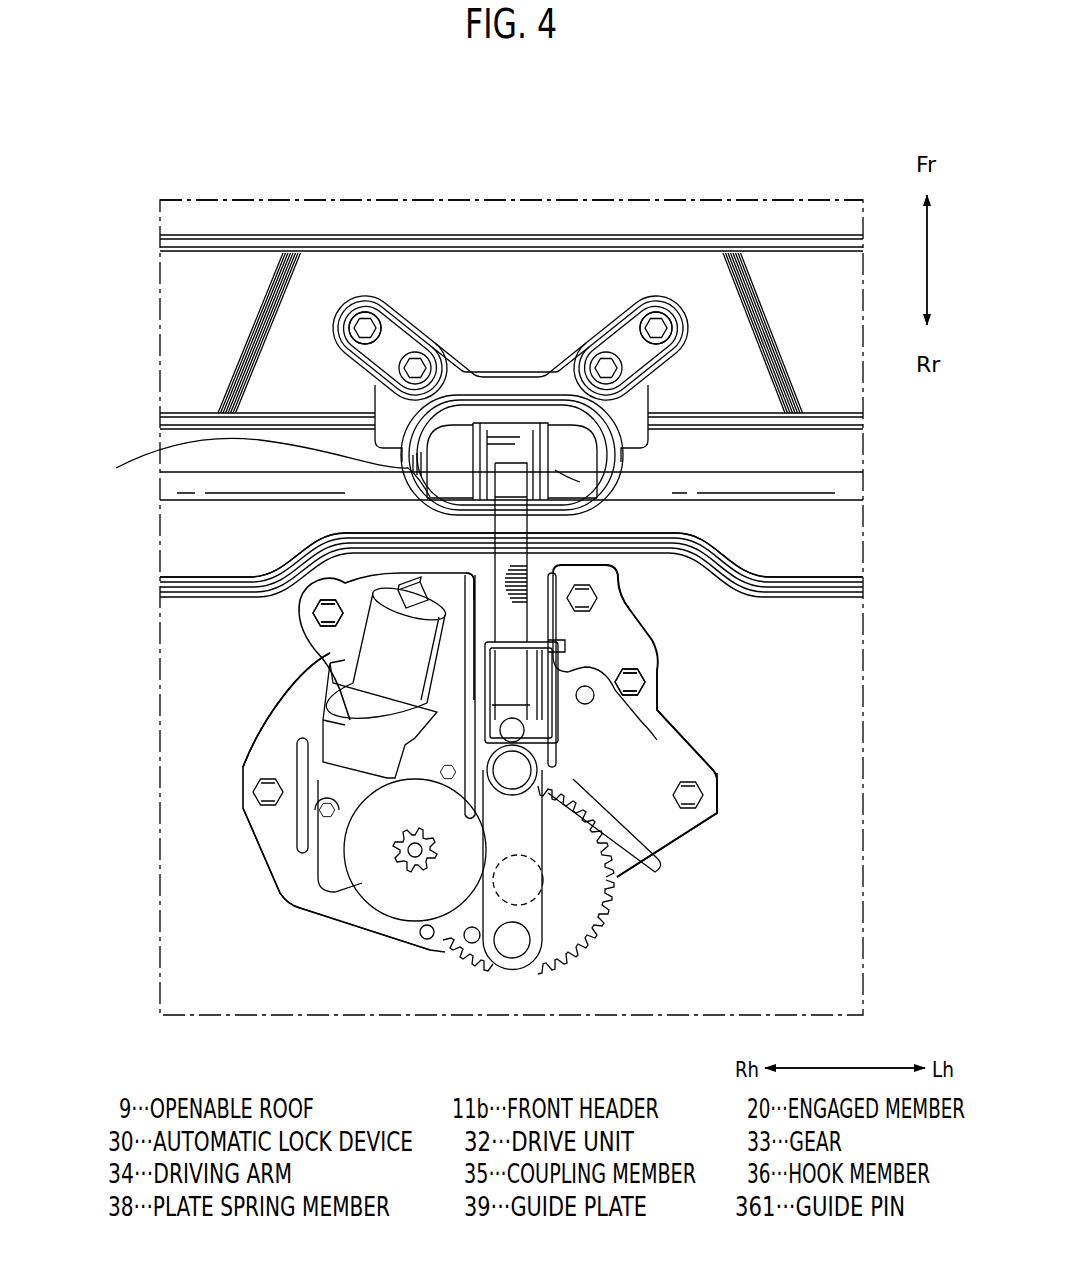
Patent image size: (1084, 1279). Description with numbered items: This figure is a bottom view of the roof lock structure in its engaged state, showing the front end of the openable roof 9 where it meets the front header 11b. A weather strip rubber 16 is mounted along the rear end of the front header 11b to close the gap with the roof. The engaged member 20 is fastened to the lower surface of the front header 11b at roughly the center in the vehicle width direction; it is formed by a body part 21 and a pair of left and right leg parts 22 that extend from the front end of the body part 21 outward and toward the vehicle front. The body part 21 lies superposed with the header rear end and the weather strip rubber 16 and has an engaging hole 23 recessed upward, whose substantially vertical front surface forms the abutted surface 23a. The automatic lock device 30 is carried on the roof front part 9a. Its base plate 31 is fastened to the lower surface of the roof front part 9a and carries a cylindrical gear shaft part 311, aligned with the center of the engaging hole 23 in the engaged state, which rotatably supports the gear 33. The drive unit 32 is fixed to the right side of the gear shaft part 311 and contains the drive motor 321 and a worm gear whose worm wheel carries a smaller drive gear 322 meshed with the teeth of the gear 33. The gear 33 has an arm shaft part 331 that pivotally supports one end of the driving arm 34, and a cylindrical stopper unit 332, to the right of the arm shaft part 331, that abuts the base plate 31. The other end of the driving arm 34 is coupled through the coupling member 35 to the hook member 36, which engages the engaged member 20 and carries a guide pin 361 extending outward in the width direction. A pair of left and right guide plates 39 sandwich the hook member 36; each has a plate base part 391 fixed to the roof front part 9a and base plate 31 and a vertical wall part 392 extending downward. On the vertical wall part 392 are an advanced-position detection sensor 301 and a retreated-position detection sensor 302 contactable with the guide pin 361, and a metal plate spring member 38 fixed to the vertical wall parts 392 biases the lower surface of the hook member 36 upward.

The openable roof 9 is at (190, 640).
The roof front part 9a is at (511, 555).
The front header 11b is at (197, 272).
The weather strip rubber 16 is at (805, 485).
The engaged member 20 is at (500, 373).
The body part 21 is at (261, 467).
The leg parts 22 is at (393, 333).
The engaging hole 23 is at (505, 450).
The abutted surface 23a is at (560, 473).
The automatic lock device 30 is at (270, 903).
The base plate 31 is at (693, 833).
The advanced-position detection sensor 301 is at (337, 735).
The retreated-position detection sensor 302 is at (470, 750).
The gear shaft part 311 is at (427, 940).
The drive unit 32 is at (302, 784).
The drive motor 321 is at (373, 645).
The drive gear 322 is at (412, 866).
The gear 33 is at (617, 909).
The arm shaft part 331 is at (512, 952).
The stopper unit 332 is at (473, 944).
The driving arm 34 is at (544, 948).
The coupling member 35 is at (598, 806).
The hook member 36 is at (492, 521).
The guide pin 361 is at (608, 697).
The plate spring member 38 is at (560, 733).
The guide plates 39 is at (298, 612).
The plate base part 391 is at (313, 585).
The vertical wall part 392 is at (477, 590).